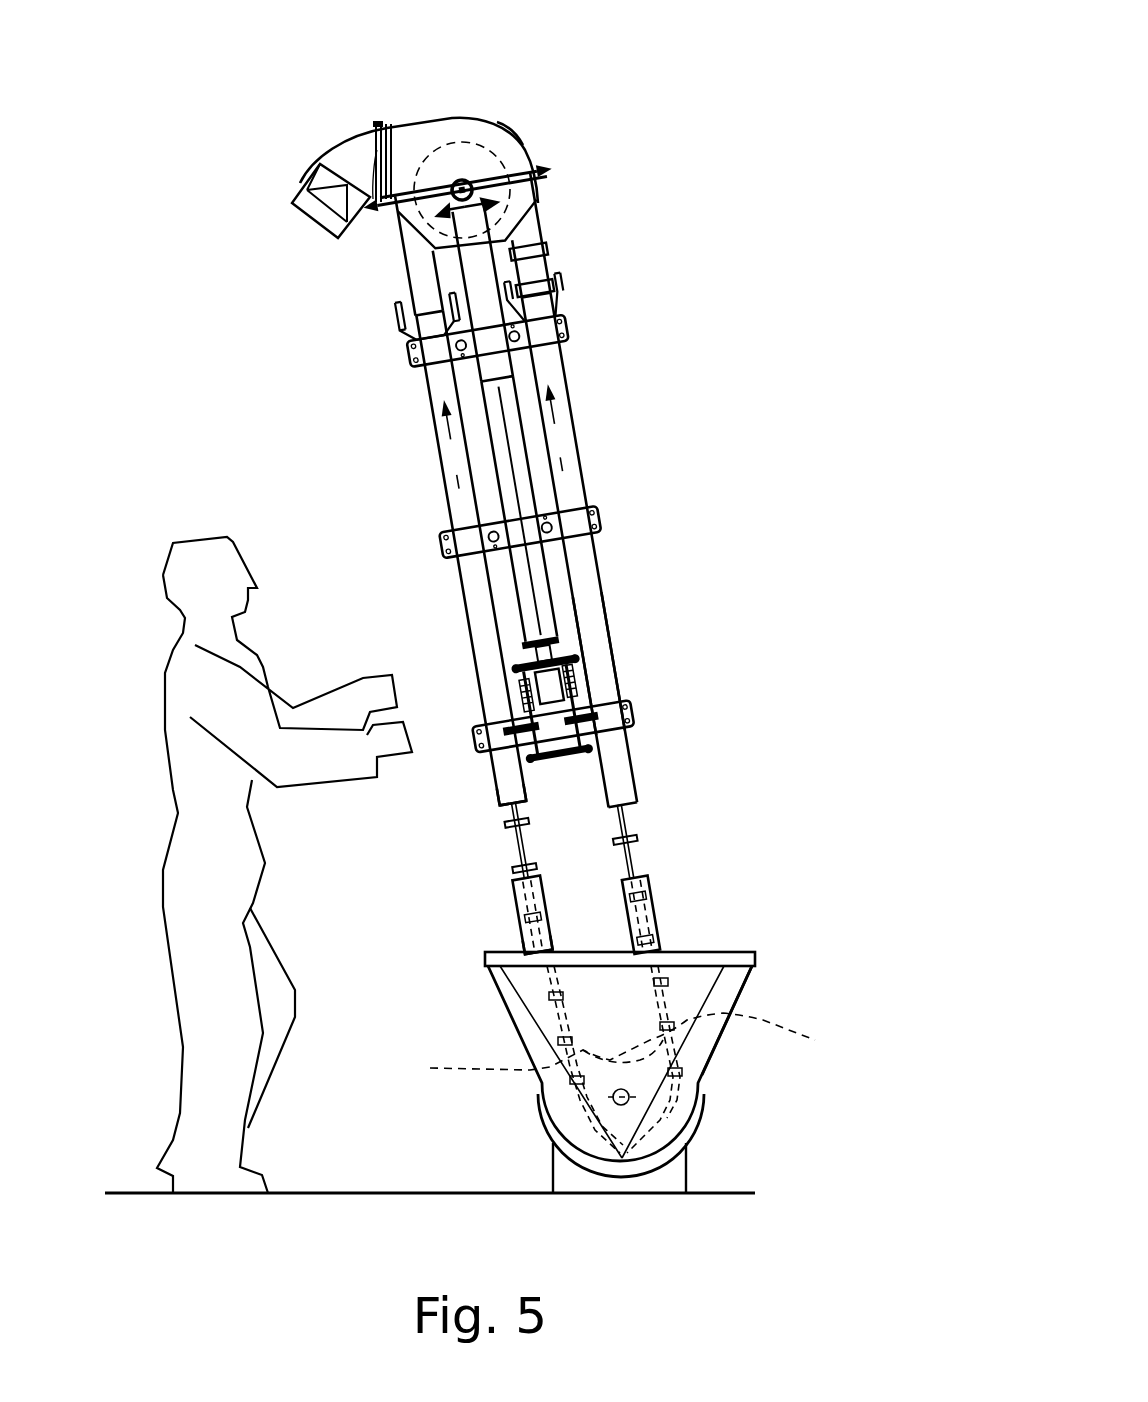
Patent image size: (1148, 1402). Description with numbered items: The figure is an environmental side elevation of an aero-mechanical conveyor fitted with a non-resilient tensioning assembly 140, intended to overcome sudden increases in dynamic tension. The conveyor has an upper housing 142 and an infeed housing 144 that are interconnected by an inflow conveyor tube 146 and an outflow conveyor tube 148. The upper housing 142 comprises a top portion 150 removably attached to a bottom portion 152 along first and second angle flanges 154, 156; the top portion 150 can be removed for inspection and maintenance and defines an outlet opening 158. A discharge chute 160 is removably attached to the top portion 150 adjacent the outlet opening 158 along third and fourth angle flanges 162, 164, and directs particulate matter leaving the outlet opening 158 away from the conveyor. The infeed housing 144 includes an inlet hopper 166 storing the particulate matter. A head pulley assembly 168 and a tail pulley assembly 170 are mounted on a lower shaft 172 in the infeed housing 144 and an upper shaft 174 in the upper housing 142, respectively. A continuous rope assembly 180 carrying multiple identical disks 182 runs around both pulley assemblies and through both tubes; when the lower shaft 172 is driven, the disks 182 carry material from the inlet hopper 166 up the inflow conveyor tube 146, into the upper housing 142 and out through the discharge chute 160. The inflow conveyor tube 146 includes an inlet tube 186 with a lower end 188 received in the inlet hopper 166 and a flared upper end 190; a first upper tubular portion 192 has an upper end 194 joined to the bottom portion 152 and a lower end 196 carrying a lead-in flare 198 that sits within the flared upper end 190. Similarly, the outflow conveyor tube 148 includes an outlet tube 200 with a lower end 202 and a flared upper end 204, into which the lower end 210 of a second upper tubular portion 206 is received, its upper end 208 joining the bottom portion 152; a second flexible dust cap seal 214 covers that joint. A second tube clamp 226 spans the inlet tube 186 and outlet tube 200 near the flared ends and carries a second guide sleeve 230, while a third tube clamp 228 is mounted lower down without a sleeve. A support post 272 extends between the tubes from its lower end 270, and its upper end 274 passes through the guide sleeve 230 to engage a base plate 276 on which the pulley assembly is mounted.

The non-resilient tensioning assembly 140 is at (594, 672).
The upper housing 142 is at (524, 121).
The infeed housing 144 is at (724, 1080).
The inflow conveyor tube 146 is at (624, 627).
The outflow conveyor tube 148 is at (436, 489).
The top portion 150 is at (472, 118).
The bottom portion 152 is at (446, 262).
The first angle flange 154 is at (552, 170).
The second angle flange 156 is at (552, 178).
The outlet opening 158 is at (350, 146).
The discharge chute 160 is at (304, 190).
The third angle flange 162 is at (379, 150).
The fourth angle flange 164 is at (388, 122).
The inlet hopper 166 is at (736, 1004).
The head pulley assembly 168 is at (598, 1048).
The tail pulley assembly 170 is at (505, 150).
The lower shaft 172 is at (645, 1098).
The upper shaft 174 is at (499, 153).
The continuous rope assembly 180 is at (638, 796).
The disks 182 is at (640, 832).
The inlet tube 186 is at (592, 480).
The lower end 188 is at (662, 925).
The flared upper end 190 is at (575, 292).
The first upper tubular portion 192 is at (556, 200).
The upper end 194 is at (548, 184).
The lower end 196 is at (548, 244).
The lead-in flare 198 is at (553, 282).
The outlet tube 200 is at (462, 602).
The lower end 202 is at (501, 792).
The flared upper end 204 is at (420, 352).
The second upper tubular portion 206 is at (420, 283).
The upper end 208 is at (430, 230).
The lower end 210 is at (415, 333).
The second flexible dust cap seal 214 is at (405, 342).
The second tube clamp 226 is at (573, 332).
The third tube clamp 228 is at (611, 521).
The second guide sleeve 230 is at (516, 373).
The lower end 270 is at (606, 580).
The support post 272 is at (560, 441).
The upper end 274 is at (452, 243).
The base plate 276 is at (438, 210).